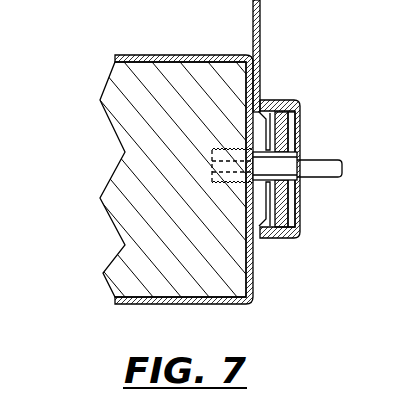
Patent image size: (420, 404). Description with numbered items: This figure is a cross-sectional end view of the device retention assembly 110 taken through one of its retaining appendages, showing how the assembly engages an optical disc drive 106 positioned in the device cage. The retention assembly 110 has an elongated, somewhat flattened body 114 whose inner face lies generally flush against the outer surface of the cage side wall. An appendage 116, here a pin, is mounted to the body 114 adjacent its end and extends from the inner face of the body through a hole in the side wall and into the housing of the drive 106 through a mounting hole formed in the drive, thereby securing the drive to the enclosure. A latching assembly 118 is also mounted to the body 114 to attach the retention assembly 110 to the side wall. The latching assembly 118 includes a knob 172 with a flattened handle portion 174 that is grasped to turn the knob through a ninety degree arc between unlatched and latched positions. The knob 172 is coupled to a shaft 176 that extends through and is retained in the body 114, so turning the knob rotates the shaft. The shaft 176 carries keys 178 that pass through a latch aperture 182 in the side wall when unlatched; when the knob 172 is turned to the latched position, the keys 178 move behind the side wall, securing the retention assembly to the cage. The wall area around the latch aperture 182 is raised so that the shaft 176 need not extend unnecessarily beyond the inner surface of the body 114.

The optical disc drive 106 is at (173, 57).
The device retention assembly 110 is at (225, 148).
The body 114 is at (273, 100).
The appendage 116 is at (215, 165).
The latching assembly 118 is at (262, 160).
The knob 172 is at (328, 172).
The handle portion 174 is at (291, 197).
The shaft 176 is at (281, 160).
The keys 178 is at (262, 160).
The latch aperture 182 is at (265, 212).